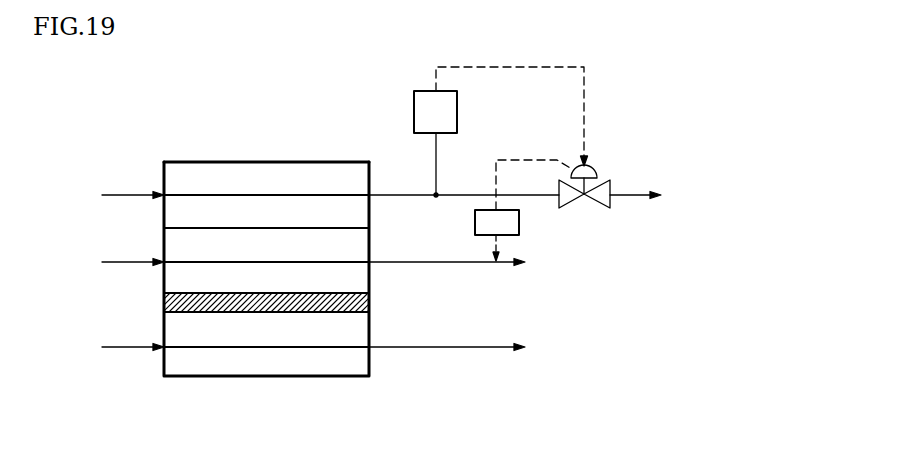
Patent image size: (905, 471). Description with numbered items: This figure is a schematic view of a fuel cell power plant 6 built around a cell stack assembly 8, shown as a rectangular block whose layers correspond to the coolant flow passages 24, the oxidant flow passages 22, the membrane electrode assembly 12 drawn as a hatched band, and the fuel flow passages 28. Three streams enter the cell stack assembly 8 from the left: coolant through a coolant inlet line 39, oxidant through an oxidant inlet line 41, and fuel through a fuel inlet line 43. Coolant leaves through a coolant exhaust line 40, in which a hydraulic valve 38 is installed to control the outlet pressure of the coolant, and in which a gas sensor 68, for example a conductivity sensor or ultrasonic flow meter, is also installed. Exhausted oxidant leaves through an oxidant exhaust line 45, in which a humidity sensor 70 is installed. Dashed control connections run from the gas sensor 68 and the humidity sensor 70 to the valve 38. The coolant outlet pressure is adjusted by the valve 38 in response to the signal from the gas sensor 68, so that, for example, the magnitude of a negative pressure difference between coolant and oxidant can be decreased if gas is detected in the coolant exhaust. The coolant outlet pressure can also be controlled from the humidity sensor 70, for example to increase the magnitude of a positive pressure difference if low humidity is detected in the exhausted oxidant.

The fuel cell power plant 6 is at (359, 140).
The cell stack assembly 8 is at (157, 156).
The membrane electrode assembly 12 is at (164, 297).
The oxidant flow passages 22 is at (330, 262).
The coolant flow passages 24 is at (266, 195).
The fuel flow passages 28 is at (265, 347).
The hydraulic valve 38 is at (597, 170).
The coolant inlet line 39 is at (313, 194).
The coolant exhaust line 40 is at (642, 194).
The oxidant inlet line 41 is at (116, 261).
The fuel inlet line 43 is at (296, 346).
The oxidant exhaust line 45 is at (393, 262).
The gas sensor 68 is at (430, 91).
The humidity sensor 70 is at (508, 222).